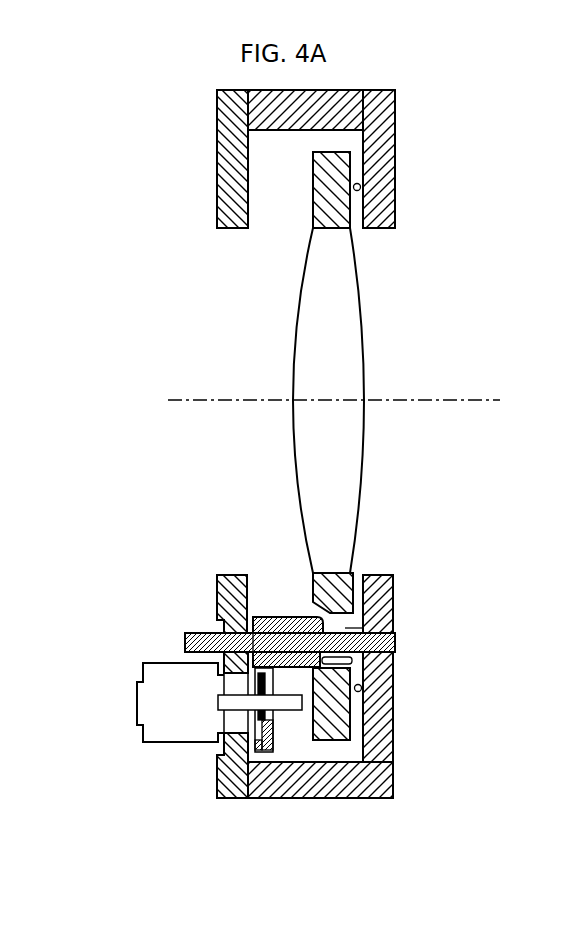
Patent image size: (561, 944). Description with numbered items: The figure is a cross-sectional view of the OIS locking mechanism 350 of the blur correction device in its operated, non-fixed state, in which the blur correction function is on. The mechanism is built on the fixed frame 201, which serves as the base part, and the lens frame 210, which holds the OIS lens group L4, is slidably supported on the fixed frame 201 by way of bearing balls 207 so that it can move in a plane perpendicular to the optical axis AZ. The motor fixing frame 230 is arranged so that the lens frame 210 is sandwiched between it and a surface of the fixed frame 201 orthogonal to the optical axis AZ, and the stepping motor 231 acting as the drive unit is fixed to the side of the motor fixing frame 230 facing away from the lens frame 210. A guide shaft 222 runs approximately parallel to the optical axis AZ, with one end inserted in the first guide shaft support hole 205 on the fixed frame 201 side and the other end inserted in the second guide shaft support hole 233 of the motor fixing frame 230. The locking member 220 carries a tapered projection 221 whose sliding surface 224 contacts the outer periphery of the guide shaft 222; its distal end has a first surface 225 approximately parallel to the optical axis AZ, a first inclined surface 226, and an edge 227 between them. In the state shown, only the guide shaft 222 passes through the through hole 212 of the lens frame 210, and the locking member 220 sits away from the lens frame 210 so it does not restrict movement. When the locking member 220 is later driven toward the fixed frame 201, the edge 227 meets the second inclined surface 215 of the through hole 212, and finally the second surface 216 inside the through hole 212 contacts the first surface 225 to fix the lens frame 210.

The OIS locking mechanism 350 is at (70, 566).
The fixed frame 201 is at (395, 147).
The motor fixing frame 230 is at (217, 220).
The second guide shaft support hole 233 is at (223, 632).
The lens frame 210 is at (312, 219).
The bearing ball 207 is at (357, 190).
The OIS lens group L4 is at (363, 360).
The optical axis AZ is at (314, 401).
The through hole 212 is at (355, 612).
The second surface 216 is at (390, 575).
The first guide shaft support hole 205 is at (395, 633).
The sliding surface 224 is at (185, 644).
The first surface 225 is at (300, 616).
The guide shaft 222 is at (395, 646).
The projection 221 is at (280, 615).
The locking member 220 is at (262, 600).
The second inclined surface 215 is at (340, 626).
The first inclined surface 226 is at (315, 702).
The edge 227 is at (338, 661).
The stepping motor 231 is at (153, 703).